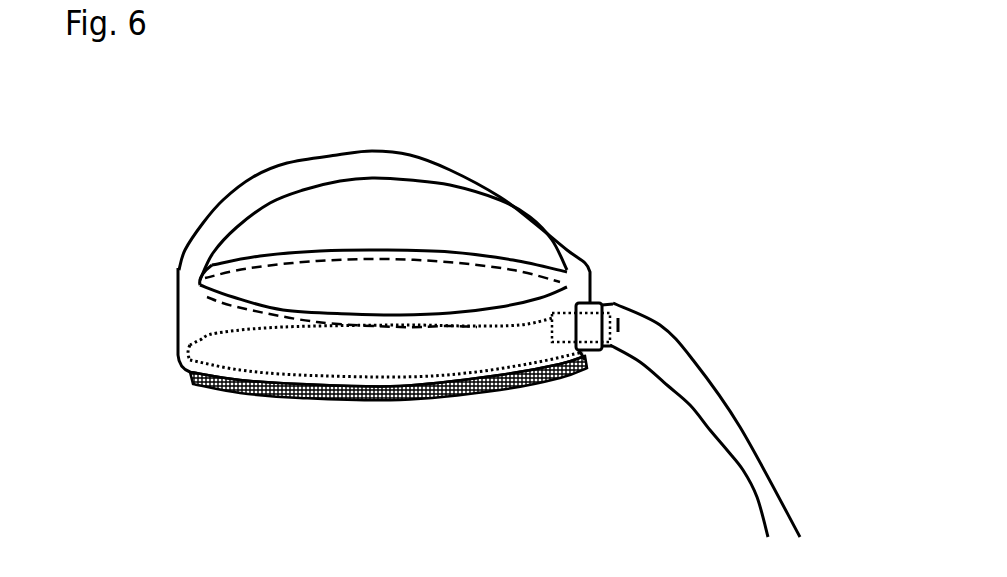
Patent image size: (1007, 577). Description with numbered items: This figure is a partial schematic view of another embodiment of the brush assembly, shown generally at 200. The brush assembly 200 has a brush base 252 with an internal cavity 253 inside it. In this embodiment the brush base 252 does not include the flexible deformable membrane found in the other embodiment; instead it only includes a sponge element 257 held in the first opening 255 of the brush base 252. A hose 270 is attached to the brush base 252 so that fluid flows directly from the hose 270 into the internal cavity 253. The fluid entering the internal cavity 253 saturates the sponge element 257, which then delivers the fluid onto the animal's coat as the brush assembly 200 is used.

The brush assembly 200 is at (383, 103).
The brush base 252 is at (313, 249).
The internal cavity 253 is at (200, 323).
The first opening 255 is at (185, 370).
The sponge element 257 is at (494, 405).
The hose 270 is at (680, 365).